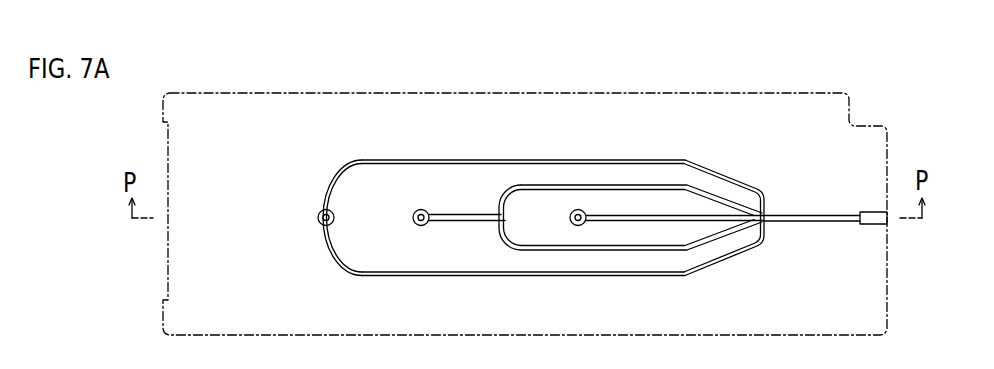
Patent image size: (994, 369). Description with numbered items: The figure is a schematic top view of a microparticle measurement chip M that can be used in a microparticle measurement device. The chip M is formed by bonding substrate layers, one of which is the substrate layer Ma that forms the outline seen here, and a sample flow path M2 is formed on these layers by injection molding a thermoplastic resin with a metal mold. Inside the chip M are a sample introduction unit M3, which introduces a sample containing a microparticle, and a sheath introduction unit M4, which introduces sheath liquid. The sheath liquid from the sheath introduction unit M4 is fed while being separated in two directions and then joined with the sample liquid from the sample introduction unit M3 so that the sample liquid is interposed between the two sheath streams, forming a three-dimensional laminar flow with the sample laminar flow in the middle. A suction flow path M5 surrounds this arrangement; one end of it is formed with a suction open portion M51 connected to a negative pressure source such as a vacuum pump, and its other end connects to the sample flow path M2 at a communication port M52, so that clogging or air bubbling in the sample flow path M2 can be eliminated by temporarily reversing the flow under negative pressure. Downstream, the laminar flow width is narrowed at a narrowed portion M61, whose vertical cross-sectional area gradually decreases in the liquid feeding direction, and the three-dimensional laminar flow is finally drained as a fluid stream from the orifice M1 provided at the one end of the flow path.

The microparticle measurement chip M is at (827, 70).
The substrate layer Ma is at (525, 214).
The orifice M1 is at (888, 223).
The sample flow path M2 is at (838, 223).
The sample introduction unit M3 is at (578, 209).
The sheath introduction unit M4 is at (420, 209).
The suction flow path M5 is at (515, 160).
The suction open portion M51 is at (318, 217).
The communication port M52 is at (765, 210).
The narrowed portion M61 is at (798, 214).